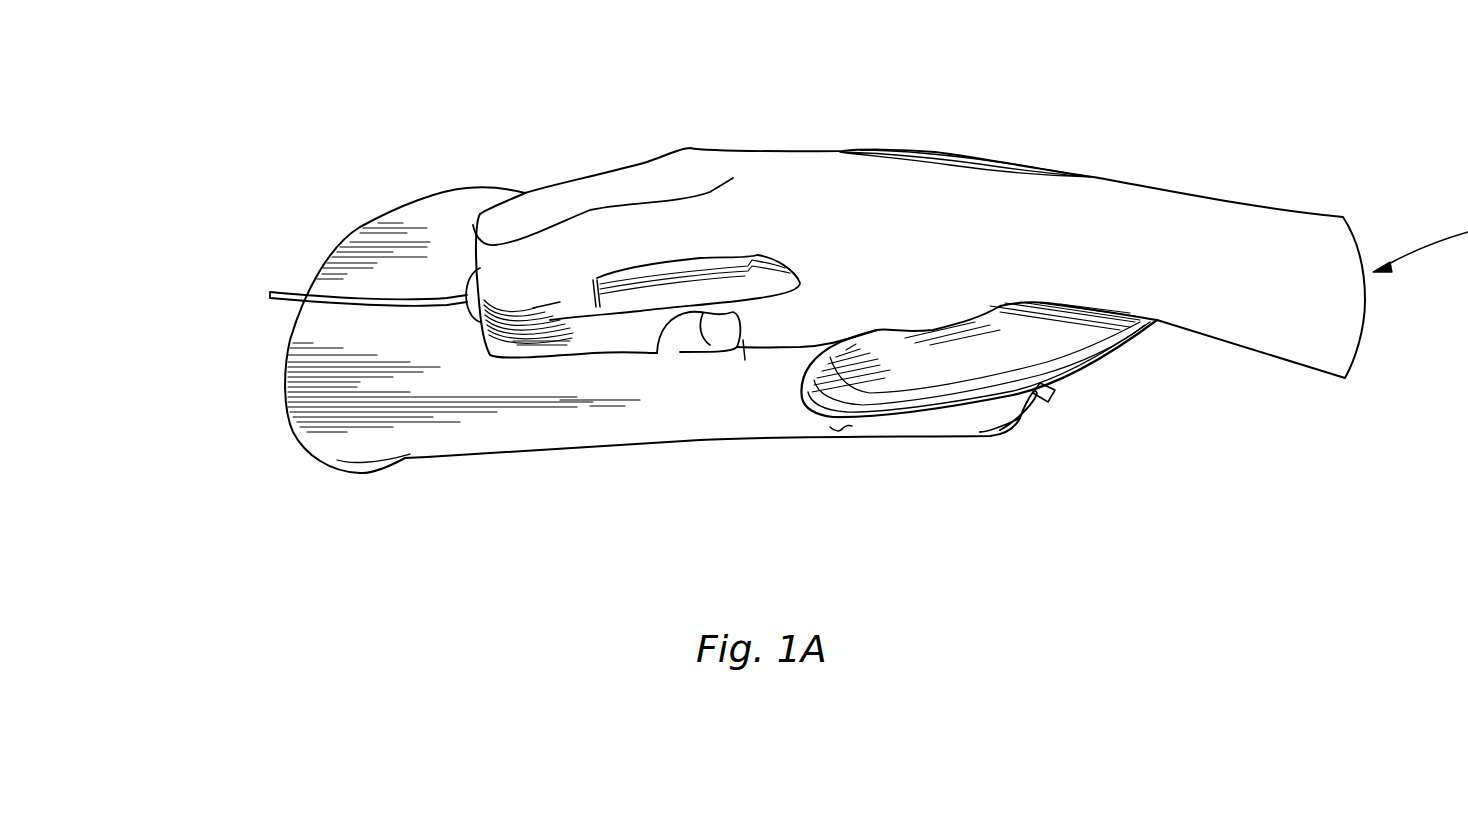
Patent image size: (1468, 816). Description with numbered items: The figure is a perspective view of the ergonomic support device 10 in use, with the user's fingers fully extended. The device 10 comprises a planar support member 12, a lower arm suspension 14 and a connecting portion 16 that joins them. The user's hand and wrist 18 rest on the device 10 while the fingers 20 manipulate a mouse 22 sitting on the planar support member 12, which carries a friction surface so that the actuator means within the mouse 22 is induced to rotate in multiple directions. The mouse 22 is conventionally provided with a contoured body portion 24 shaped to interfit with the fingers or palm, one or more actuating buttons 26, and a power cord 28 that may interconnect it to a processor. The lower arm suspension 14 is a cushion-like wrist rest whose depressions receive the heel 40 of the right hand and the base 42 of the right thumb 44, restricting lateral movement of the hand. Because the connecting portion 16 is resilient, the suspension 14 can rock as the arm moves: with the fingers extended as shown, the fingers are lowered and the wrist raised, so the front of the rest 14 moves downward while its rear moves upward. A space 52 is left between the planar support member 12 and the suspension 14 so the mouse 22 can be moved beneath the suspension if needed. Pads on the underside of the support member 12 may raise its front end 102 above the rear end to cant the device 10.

The device 10 is at (443, 512).
The planar support member 12 is at (645, 437).
The front end 102 is at (313, 343).
The power cord 28 is at (282, 292).
The actuating buttons 26 is at (548, 302).
The mouse 22 is at (597, 333).
The right thumb 44 is at (744, 345).
The space 52 is at (838, 429).
The connecting portion 16 is at (1048, 397).
The fingers 20 is at (647, 162).
The contoured body portion 24 is at (675, 287).
The heel 40 is at (947, 165).
The hand and wrist 18 is at (1037, 197).
The lower arm suspension 14 is at (1147, 333).
The base of the thumb 42 is at (962, 325).